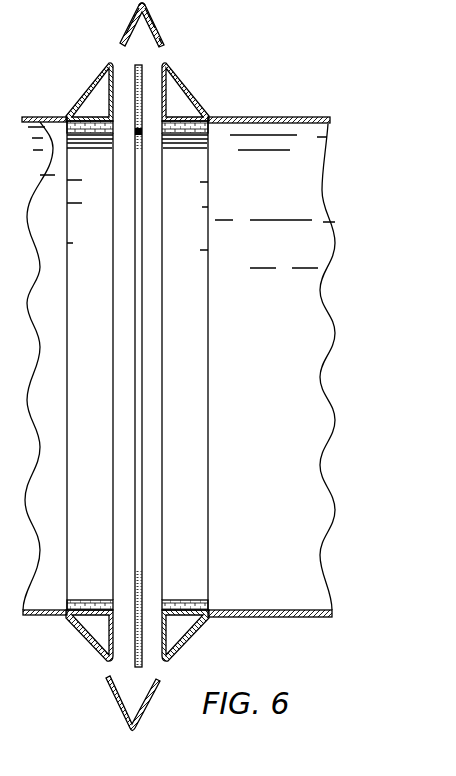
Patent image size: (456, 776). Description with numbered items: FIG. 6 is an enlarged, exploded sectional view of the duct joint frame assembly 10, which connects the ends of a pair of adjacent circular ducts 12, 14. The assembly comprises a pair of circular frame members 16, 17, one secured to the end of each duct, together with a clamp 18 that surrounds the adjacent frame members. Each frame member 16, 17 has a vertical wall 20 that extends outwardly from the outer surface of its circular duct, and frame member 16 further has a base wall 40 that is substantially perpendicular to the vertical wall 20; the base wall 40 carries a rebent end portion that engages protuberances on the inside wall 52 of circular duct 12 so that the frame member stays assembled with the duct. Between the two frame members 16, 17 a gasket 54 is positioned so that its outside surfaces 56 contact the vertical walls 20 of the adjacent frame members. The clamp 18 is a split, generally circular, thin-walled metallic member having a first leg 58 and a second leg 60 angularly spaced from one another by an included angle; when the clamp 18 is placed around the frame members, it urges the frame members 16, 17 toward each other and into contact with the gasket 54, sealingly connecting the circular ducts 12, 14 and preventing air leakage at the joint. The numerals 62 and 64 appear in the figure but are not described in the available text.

The duct joint frame assembly 10 is at (266, 48).
The circular duct 12 is at (43, 117).
The circular duct 14 is at (312, 120).
The frame member 16 is at (96, 74).
The frame member 17 is at (189, 78).
The clamp 18 is at (150, 14).
The vertical wall 20 is at (108, 100).
The base wall 40 is at (68, 556).
The inside wall 52 is at (42, 127).
The gasket 54 is at (146, 65).
The outside surfaces 56 is at (135, 115).
The first leg 58 is at (133, 15).
The second leg 60 is at (154, 28).
The left leg of spring member 62 is at (124, 36).
The leg end portion 64 is at (161, 43).